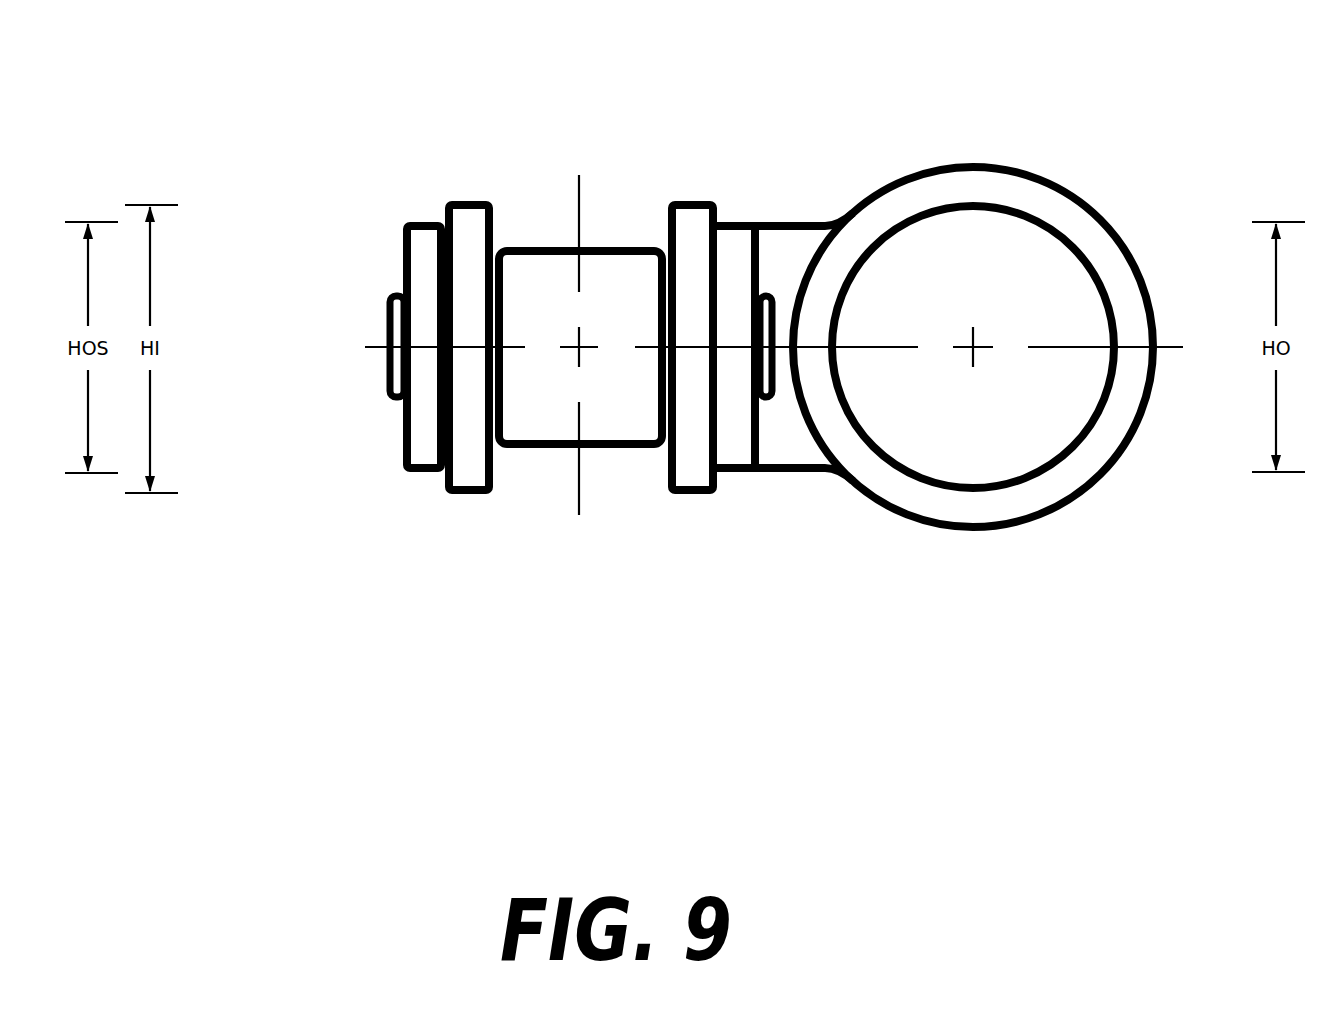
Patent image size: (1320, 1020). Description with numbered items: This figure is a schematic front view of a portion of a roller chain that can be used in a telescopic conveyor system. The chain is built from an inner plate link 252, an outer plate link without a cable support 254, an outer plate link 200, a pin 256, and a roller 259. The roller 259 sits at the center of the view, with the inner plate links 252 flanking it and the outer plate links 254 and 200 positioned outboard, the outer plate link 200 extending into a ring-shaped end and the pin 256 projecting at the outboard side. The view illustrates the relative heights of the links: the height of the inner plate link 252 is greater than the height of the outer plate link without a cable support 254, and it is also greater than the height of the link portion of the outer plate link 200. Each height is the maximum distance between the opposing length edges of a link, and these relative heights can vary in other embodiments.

The outer plate link 200 is at (812, 455).
The inner plate link 252 is at (468, 228).
The outer plate link without a cable support 254 is at (422, 252).
The pin 256 is at (387, 380).
The roller 259 is at (550, 270).